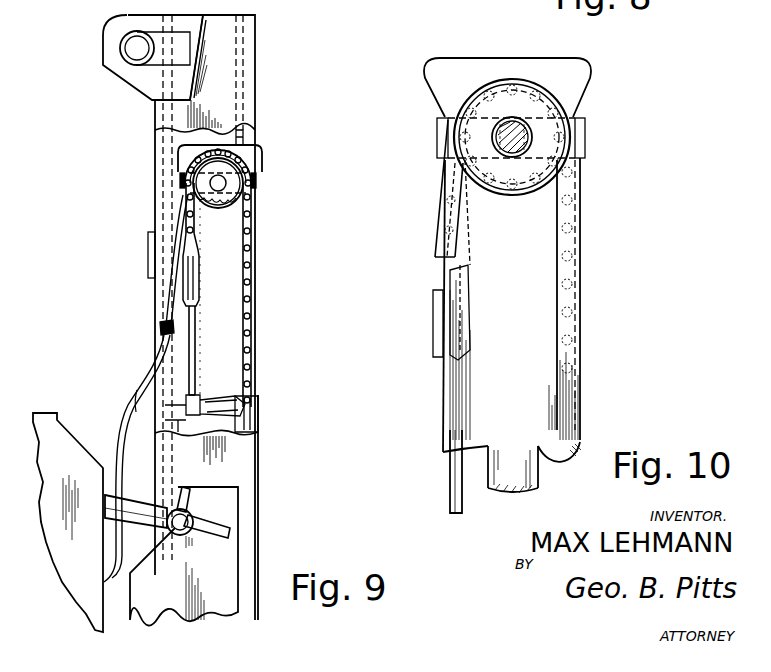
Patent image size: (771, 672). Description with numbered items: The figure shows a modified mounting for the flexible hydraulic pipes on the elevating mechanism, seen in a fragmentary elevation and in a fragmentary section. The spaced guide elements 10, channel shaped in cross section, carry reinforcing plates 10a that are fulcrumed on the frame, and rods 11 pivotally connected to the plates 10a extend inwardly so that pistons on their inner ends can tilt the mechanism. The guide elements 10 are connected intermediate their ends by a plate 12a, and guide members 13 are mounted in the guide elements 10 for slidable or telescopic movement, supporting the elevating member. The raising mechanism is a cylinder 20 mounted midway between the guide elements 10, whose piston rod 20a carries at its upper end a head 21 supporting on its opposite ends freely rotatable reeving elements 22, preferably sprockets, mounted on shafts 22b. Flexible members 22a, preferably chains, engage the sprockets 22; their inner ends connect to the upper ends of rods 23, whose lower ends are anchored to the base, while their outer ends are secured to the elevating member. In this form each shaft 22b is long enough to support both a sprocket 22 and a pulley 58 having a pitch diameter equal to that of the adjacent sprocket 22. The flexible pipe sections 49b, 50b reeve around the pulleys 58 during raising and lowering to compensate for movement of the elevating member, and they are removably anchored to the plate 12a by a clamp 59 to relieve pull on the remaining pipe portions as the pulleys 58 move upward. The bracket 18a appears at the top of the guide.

In FIG. 9, the guide elements 10 is at (255, 136).
In FIG. 9, the reinforcing plates 10a is at (228, 508).
In FIG. 9, the rods 11 is at (140, 505).
In FIG. 9, the plate 12a is at (148, 273).
In FIG. 9, the guide members 13 is at (245, 135).
In FIG. 9, the pivot bracket 18a is at (147, 86).
In FIG. 9, the cylinder 20 is at (225, 304).
In FIG. 10, the cylinder 20 is at (525, 278).
In FIG. 10, the rod 20a is at (538, 474).
In FIG. 9, the head 21 is at (255, 165).
In FIG. 10, the head 21 is at (583, 78).
In FIG. 9, the reeving elements 22 is at (224, 209).
In FIG. 9, the flexible members 22a is at (258, 243).
In FIG. 10, the flexible members 22a is at (562, 315).
In FIG. 10, the shafts 22b is at (508, 160).
In FIG. 9, the rods 23 is at (196, 352).
In FIG. 10, the rods 23 is at (450, 494).
In FIG. 9, the outer pipe section 49b is at (136, 414).
In FIG. 9, the outer pipe section 50b is at (126, 407).
In FIG. 10, the outer pipe section 50b is at (437, 243).
In FIG. 10, the pulley 58 is at (514, 83).
In FIG. 9, the clamp 59 is at (160, 329).